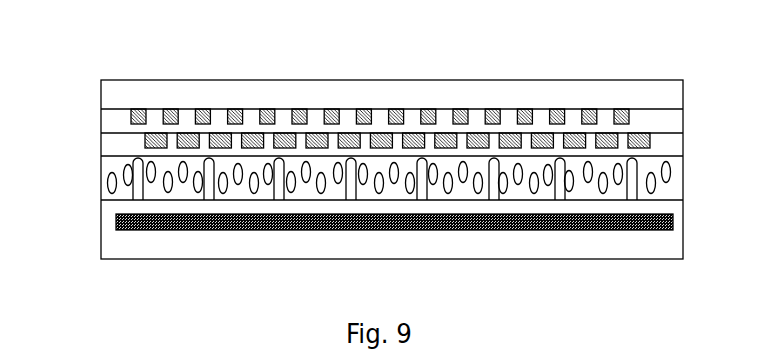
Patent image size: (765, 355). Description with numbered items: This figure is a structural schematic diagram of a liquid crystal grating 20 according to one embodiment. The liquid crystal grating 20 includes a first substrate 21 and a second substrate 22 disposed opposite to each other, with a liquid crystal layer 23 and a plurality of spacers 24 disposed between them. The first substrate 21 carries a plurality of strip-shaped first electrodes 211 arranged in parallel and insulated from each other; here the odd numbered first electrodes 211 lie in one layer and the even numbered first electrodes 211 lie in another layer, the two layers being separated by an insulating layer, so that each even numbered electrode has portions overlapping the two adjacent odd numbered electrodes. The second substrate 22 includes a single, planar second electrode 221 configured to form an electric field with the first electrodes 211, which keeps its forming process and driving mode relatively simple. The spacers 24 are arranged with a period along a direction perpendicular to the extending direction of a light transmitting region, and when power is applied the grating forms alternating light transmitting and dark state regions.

The liquid crystal grating 20 is at (127, 49).
The first substrate 21 is at (383, 118).
The first electrodes 211 is at (145, 142).
The second substrate 22 is at (382, 229).
The second electrode 221 is at (116, 223).
The liquid crystal layer 23 is at (108, 189).
The spacers 24 is at (136, 160).